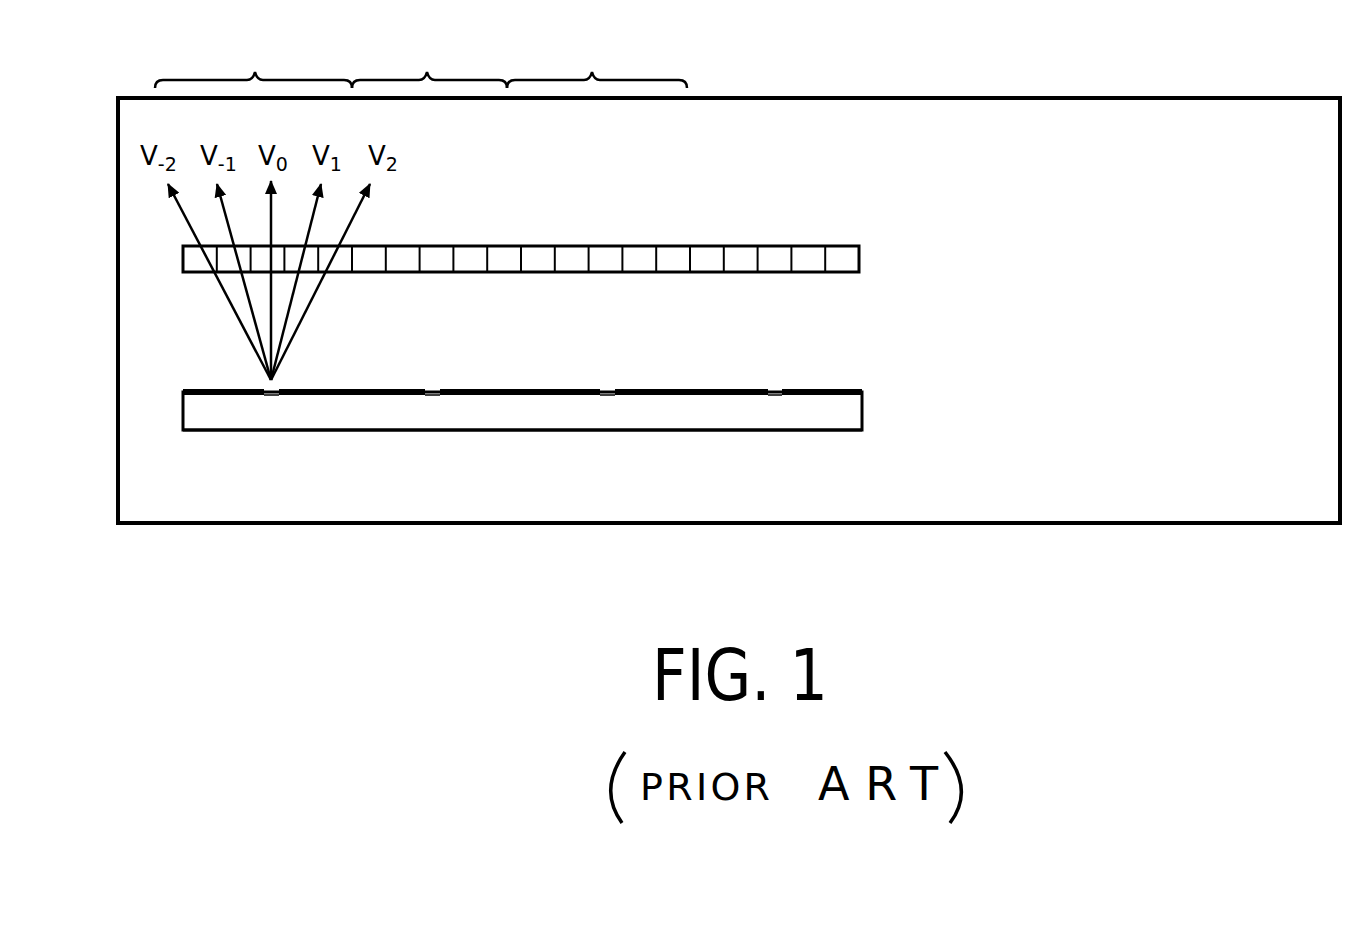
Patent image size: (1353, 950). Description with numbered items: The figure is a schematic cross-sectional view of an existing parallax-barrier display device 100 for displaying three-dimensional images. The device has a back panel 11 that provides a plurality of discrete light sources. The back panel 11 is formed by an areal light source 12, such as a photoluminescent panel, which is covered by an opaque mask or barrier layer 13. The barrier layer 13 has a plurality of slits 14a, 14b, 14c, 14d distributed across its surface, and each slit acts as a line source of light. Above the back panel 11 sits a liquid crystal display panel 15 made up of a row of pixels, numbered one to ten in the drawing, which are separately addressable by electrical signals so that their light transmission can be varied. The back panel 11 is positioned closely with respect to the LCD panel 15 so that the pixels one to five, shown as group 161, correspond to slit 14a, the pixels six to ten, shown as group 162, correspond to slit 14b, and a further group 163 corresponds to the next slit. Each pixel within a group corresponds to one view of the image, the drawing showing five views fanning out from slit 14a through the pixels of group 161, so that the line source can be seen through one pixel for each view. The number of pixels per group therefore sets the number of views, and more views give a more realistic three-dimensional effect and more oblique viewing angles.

The display device 100 is at (878, 214).
The liquid crystal display panel 15 is at (162, 261).
The back panel 11 is at (162, 411).
The areal light source 12 is at (293, 430).
The barrier layer 13 is at (843, 390).
The slit 14a is at (244, 377).
The slit 14b is at (429, 377).
The slit 14c is at (605, 377).
The slit 14d is at (774, 377).
The group of pixels 161 is at (253, 60).
The group of pixels 162 is at (429, 60).
The group of pixels 163 is at (597, 60).